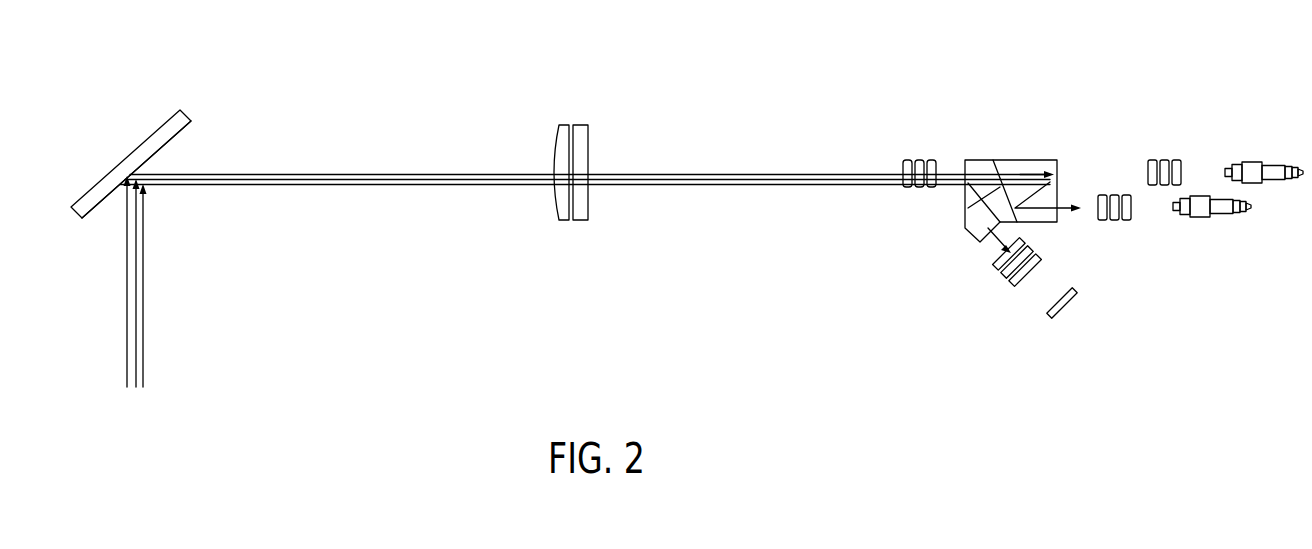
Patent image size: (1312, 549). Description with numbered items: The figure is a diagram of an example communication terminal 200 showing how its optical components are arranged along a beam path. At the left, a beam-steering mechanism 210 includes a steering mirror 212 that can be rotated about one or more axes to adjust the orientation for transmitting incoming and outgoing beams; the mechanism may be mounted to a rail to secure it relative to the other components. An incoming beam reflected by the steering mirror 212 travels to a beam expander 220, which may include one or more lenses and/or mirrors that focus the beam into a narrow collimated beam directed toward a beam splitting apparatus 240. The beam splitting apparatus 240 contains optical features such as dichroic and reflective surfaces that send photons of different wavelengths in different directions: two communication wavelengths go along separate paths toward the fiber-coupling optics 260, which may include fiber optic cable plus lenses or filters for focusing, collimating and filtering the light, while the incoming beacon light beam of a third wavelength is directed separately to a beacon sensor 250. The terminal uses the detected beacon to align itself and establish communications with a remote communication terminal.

The communication terminal 200 is at (442, 320).
The beam-steering mechanism 210 is at (175, 98).
The steering mirror 212 is at (186, 130).
The beam expander 220 is at (582, 128).
The beam splitting apparatus 240 is at (972, 158).
The beacon sensor 250 is at (1056, 330).
The fiber-coupling optics 260 is at (1164, 148).